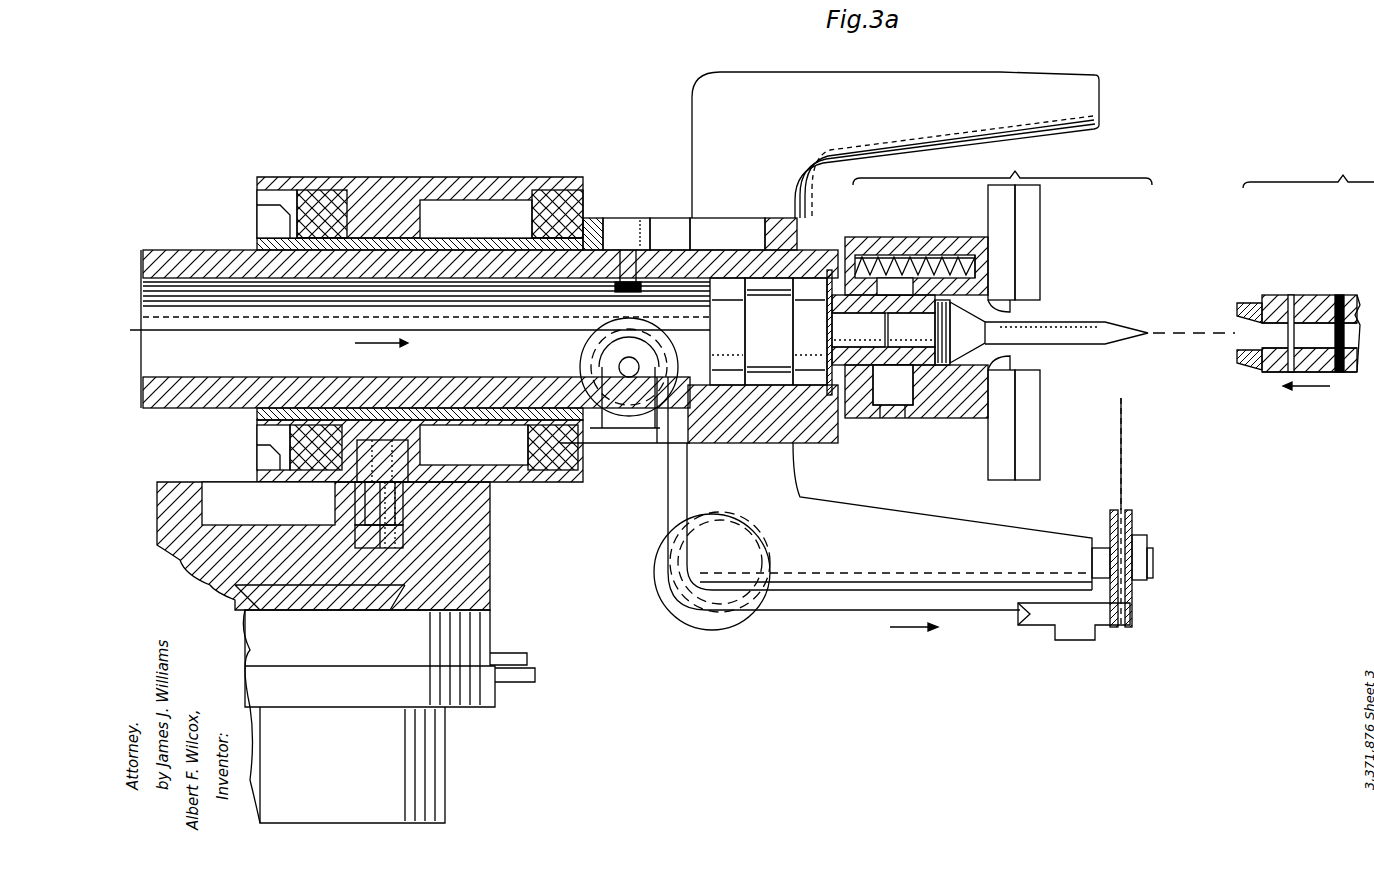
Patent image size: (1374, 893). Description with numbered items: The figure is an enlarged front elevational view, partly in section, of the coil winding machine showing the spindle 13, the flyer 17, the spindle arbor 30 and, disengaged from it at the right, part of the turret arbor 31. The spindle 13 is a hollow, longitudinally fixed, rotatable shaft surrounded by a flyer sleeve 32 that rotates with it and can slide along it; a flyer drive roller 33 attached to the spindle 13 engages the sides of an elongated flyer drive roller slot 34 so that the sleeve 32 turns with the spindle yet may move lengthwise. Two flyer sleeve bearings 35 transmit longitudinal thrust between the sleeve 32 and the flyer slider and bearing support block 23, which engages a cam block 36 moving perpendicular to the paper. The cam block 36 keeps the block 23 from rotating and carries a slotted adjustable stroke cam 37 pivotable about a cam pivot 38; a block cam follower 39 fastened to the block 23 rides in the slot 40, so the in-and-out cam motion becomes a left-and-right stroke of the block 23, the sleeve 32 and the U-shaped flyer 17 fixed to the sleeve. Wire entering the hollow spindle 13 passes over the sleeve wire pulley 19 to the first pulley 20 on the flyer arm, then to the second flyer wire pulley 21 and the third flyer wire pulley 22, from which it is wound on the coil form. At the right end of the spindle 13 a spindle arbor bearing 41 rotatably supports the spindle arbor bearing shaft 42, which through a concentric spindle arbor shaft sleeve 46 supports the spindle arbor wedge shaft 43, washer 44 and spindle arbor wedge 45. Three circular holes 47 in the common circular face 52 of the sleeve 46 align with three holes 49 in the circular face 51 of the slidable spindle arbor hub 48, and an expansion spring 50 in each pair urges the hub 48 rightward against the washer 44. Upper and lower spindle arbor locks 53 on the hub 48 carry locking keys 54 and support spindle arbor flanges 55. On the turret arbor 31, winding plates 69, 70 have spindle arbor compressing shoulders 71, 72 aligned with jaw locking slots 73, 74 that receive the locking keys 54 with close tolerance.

The spindle 13 is at (168, 209).
The flyer 17 is at (1025, 52).
The sleeve wire pulley 19 is at (582, 358).
The first pulley 20 is at (688, 615).
The second flyer wire pulley 21 is at (1035, 625).
The third flyer wire pulley 22 is at (1133, 530).
The flyer slider and bearing support block 23 is at (485, 150).
The spindle arbor 30 is at (1002, 169).
The turret arbor 31 is at (1308, 172).
The flyer sleeve 32 is at (208, 228).
The flyer drive roller 33 is at (642, 199).
The flyer drive roller slot 34 is at (672, 218).
The flyer sleeve bearings 35 is at (323, 190).
The cam block 36 is at (490, 548).
The adjustable stroke cam 37 is at (365, 496).
The cam pivot 38 is at (400, 517).
The block cam follower 39 is at (405, 447).
The slot 40 is at (370, 502).
The spindle arbor bearing 41 is at (733, 330).
The spindle arbor bearing shaft 42 is at (772, 330).
The spindle arbor wedge shaft 43 is at (918, 332).
The washer 44 is at (955, 340).
The spindle arbor wedge 45 is at (1085, 322).
The spindle arbor shaft sleeve 46 is at (903, 389).
The circular holes 47 is at (868, 255).
The spindle arbor hub 48 is at (955, 448).
The holes 49 is at (968, 255).
The expansion spring 50 is at (905, 255).
The circular face 51 is at (905, 418).
The common circular face 52 is at (880, 418).
The spindle arbor locks 53 is at (1010, 219).
The locking keys 54 is at (1010, 304).
The spindle arbor flanges 55 is at (1037, 219).
The winding plate 69 is at (1310, 295).
The winding plate 70 is at (1345, 372).
The spindle arbor compressing shoulder 71 is at (1290, 305).
The spindle arbor compressing shoulder 72 is at (1262, 372).
The jaw locking slot 73 is at (1250, 303).
The jaw locking slot 74 is at (1250, 365).